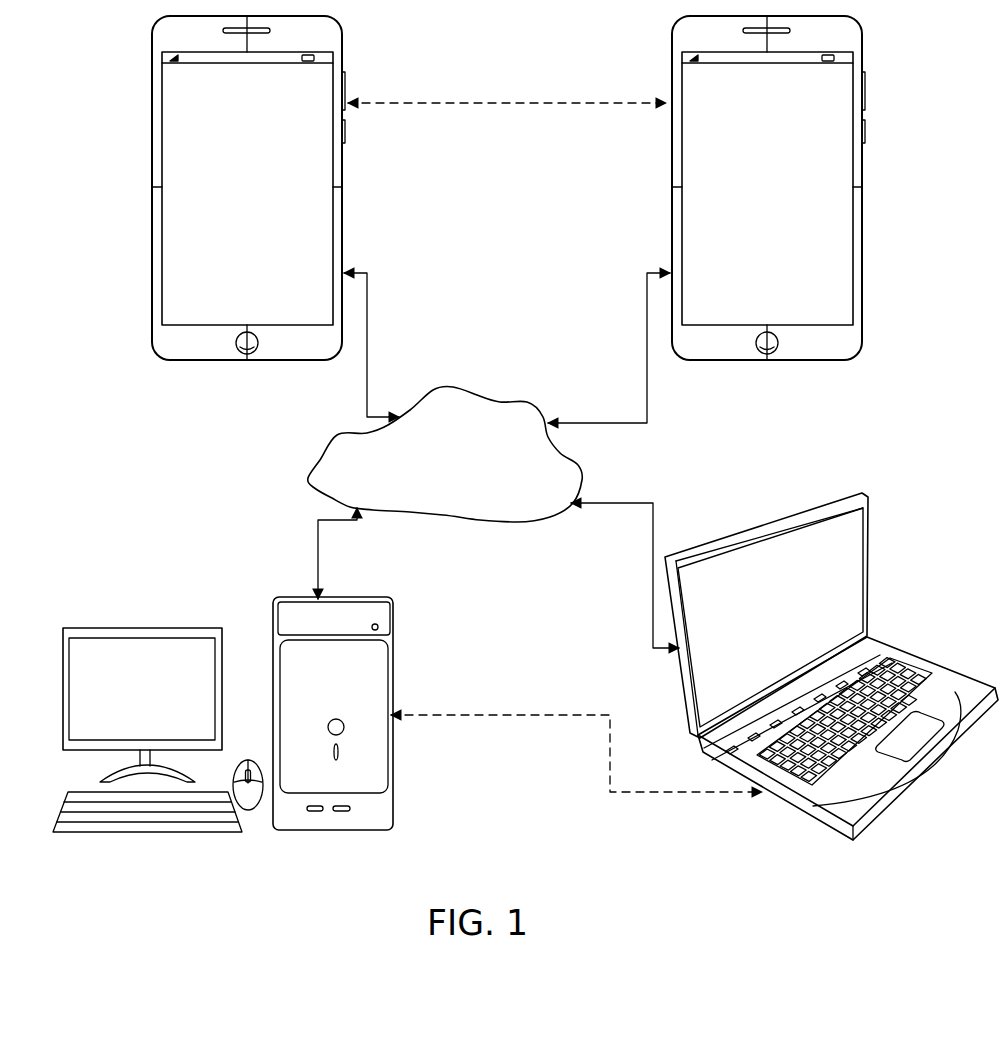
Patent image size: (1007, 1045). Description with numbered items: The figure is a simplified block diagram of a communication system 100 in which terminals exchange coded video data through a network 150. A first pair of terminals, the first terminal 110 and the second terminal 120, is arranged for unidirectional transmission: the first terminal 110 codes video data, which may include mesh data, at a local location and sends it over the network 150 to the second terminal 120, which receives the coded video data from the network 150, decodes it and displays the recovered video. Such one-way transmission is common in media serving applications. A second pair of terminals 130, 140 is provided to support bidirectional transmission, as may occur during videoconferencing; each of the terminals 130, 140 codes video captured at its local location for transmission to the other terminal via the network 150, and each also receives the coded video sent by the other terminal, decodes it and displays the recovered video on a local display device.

The communication system 100 is at (82, 83).
The first terminal 110 is at (867, 542).
The second terminal 120 is at (393, 797).
The terminal 130 is at (215, 188).
The terminal 140 is at (672, 140).
The network 150 is at (426, 453).